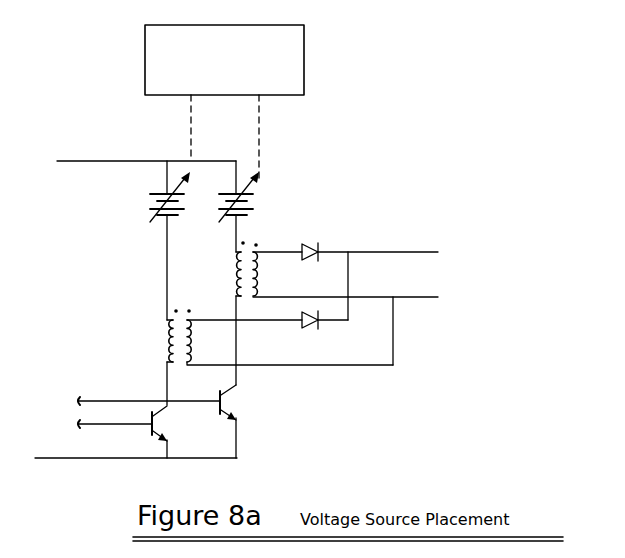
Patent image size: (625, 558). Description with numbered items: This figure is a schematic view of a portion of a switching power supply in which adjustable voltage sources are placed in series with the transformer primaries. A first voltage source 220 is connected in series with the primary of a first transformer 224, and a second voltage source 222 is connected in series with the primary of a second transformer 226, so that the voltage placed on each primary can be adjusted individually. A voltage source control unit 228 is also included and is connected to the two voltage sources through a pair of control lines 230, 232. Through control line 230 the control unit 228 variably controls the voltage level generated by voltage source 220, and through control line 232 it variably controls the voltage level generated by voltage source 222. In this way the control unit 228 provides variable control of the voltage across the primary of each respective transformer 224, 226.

The voltage source 220 is at (143, 204).
The voltage source 222 is at (262, 207).
The transformer 224 is at (165, 339).
The transformer 226 is at (252, 242).
The voltage source control unit 228 is at (308, 73).
The control line 230 is at (189, 138).
The control line 232 is at (266, 148).